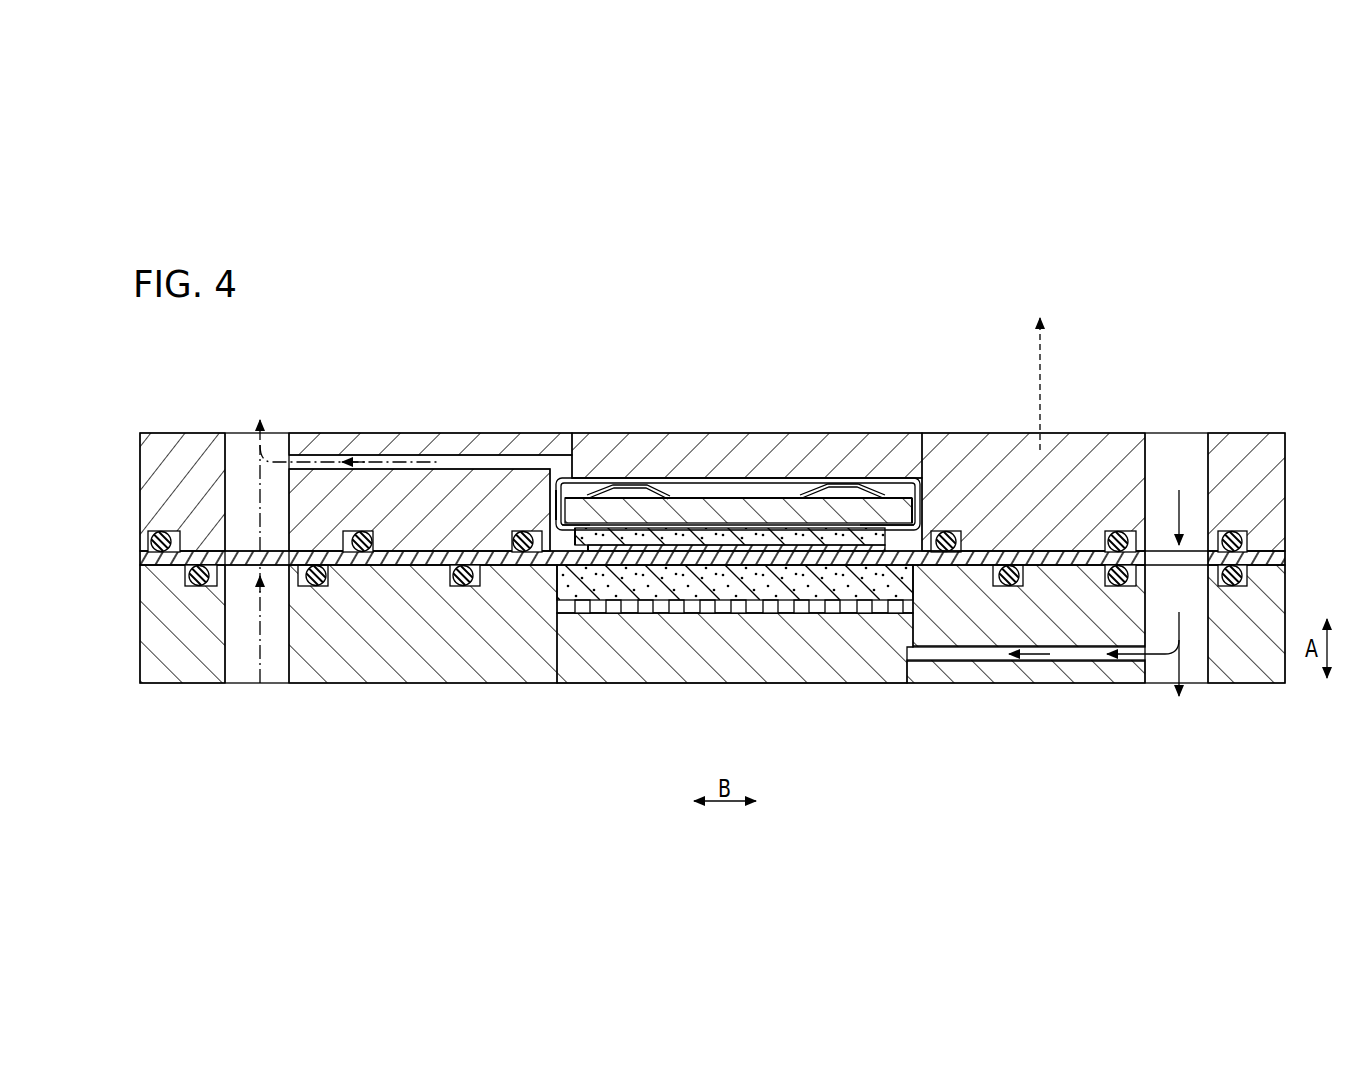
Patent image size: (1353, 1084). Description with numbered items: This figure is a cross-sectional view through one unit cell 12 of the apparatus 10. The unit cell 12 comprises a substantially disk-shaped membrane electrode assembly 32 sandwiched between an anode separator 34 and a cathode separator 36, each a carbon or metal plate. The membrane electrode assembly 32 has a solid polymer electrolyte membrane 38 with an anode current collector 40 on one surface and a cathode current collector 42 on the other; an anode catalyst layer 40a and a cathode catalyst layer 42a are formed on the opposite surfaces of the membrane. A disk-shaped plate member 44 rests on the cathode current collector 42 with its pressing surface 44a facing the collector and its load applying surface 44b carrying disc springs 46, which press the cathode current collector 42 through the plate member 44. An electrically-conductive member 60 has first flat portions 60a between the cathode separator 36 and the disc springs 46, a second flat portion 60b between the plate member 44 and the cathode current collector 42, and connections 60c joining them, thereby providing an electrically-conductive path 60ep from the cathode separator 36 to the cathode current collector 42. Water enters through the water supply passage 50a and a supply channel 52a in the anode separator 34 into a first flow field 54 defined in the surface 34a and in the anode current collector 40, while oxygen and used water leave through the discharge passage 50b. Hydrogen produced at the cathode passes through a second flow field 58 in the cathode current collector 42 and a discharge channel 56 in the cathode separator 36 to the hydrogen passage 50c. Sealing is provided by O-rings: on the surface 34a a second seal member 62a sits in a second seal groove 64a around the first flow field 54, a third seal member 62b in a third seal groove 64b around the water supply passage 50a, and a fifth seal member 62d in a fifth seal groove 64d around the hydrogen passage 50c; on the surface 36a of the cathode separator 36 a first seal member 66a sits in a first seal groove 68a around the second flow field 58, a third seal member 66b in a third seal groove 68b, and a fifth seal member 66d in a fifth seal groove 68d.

The electrolysis device 10 is at (932, 346).
The unit cell 12 is at (758, 527).
The membrane electrode assembly 32 is at (139, 550).
The anode separator 34 is at (139, 619).
The surface of the anode separator 34a is at (1238, 587).
The cathode separator 36 is at (139, 482).
The surface of the cathode separator 36a is at (1230, 531).
The solid polymer electrolyte membrane 38 is at (765, 600).
The anode current collector 40 is at (812, 565).
The anode catalyst layer 40a is at (800, 551).
The cathode current collector 42 is at (850, 528).
The cathode catalyst layer 42a is at (582, 530).
The plate member 44 is at (791, 495).
The pressing surface 44a is at (943, 527).
The load applying surface 44b is at (870, 490).
The disc springs 46 is at (690, 524).
The water supply passage 50a is at (1173, 456).
The discharge passage 50b is at (1036, 437).
The hydrogen passage 50c is at (263, 683).
The supply channel 52a is at (985, 650).
The first flow field 54 is at (582, 603).
The discharge channel 56 is at (430, 465).
The second flow field 58 is at (712, 490).
The electrically-conductive member 60 is at (646, 474).
The first flat portions 60a is at (843, 478).
The second flat portion 60b is at (845, 566).
The connections 60c is at (604, 531).
The electrically-conductive path 60ep is at (604, 477).
The second seal member 62a is at (463, 587).
The third seal member 62b is at (1127, 565).
The fifth seal member 62d is at (188, 568).
The second seal groove 64a is at (473, 587).
The third seal groove 64b is at (1137, 586).
The fifth seal groove 64d is at (208, 567).
The first seal member 66a is at (520, 531).
The third seal member 66b is at (1107, 533).
The fifth seal member 66d is at (363, 531).
The first seal groove 68a is at (540, 531).
The third seal groove 68b is at (1136, 531).
The fifth seal groove 68d is at (350, 531).